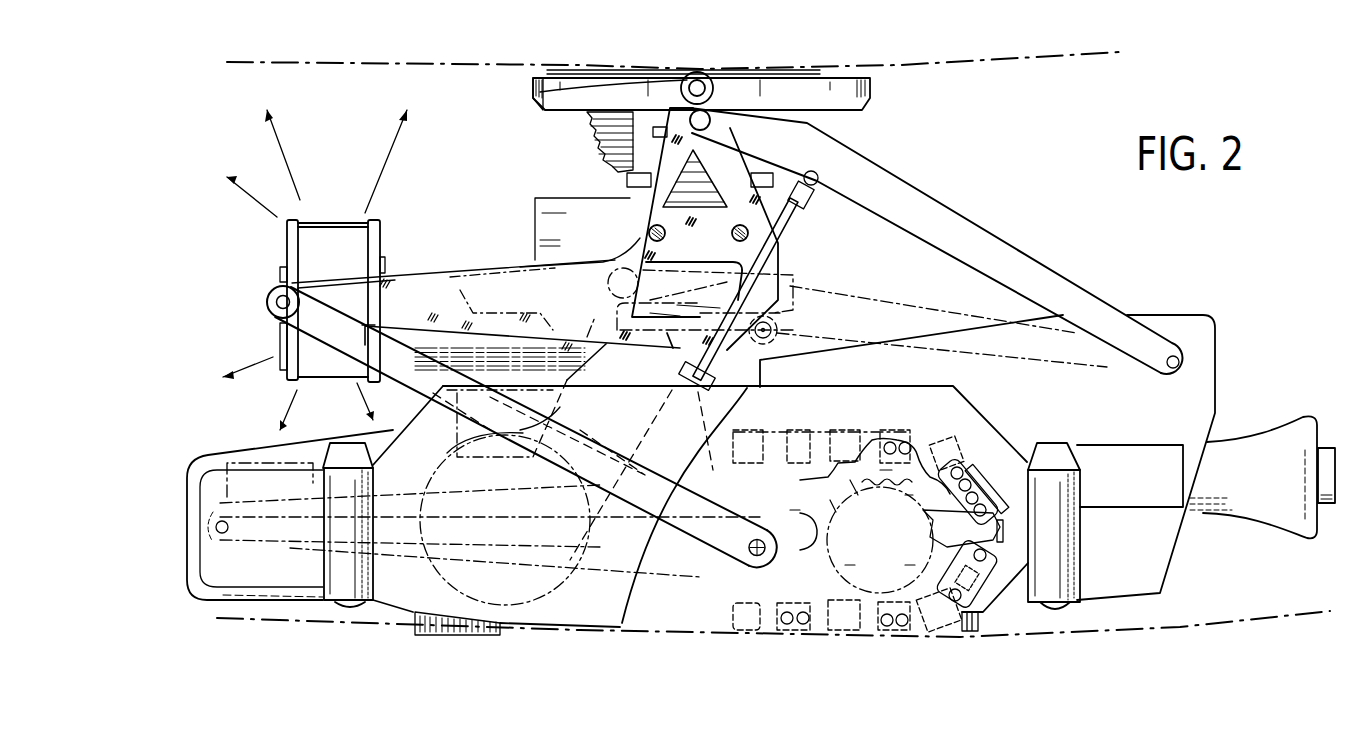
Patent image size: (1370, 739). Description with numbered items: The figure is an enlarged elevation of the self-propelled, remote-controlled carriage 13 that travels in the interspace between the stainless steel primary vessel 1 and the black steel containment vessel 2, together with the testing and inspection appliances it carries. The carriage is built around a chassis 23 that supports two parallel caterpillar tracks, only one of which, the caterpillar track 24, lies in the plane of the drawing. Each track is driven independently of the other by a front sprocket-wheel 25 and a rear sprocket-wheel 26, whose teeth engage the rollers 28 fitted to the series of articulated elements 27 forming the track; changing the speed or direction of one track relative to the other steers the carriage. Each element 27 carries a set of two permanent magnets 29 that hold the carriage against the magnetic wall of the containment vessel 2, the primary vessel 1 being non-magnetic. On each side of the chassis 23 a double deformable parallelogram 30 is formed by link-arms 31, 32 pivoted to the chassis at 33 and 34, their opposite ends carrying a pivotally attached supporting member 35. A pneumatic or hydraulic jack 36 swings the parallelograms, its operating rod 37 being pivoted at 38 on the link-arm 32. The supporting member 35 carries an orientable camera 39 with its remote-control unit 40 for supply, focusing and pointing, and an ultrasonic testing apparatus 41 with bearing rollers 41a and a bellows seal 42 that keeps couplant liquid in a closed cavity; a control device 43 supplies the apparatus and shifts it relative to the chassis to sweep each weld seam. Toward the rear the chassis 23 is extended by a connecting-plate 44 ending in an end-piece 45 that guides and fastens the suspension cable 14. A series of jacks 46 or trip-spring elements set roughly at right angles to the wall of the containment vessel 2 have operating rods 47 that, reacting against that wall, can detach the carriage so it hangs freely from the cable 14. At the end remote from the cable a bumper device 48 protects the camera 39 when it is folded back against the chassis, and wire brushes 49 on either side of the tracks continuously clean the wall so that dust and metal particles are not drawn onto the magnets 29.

The primary vessel 1 is at (413, 68).
The containment vessel 2 is at (312, 627).
The self-propelled carriage 13 is at (1197, 298).
The suspension cable 14 is at (1323, 452).
The chassis 23 is at (863, 373).
The caterpillar track 24 is at (810, 400).
The front sprocket-wheel 25 is at (560, 404).
The rear sprocket-wheel 26 is at (800, 480).
The articulated elements 27 is at (1007, 513).
The rollers 28 is at (900, 431).
The permanent magnets 29 is at (918, 553).
The double deformable parallelogram 30 is at (958, 200).
The link-arm 31 is at (345, 342).
The link-arm 32 is at (985, 232).
The pivot 33 is at (745, 560).
The pivot 34 is at (1160, 362).
The supporting member 35 is at (443, 283).
The jack 36 is at (677, 377).
The operating rod 37 is at (783, 243).
The pivot 38 is at (820, 188).
The orientable camera 39 is at (341, 238).
The remote-control unit 40 is at (400, 268).
The ultrasonic testing apparatus 41 is at (853, 90).
The bearing rollers 41a is at (533, 95).
The bellows seal 42 is at (597, 140).
The control device 43 is at (570, 208).
The connecting-plate 44 is at (1202, 377).
The end-piece 45 is at (1240, 452).
The jacks 46 is at (1060, 568).
The operating rods 47 is at (1053, 608).
The bumper device 48 is at (213, 454).
The wire brushes 49 is at (413, 614).